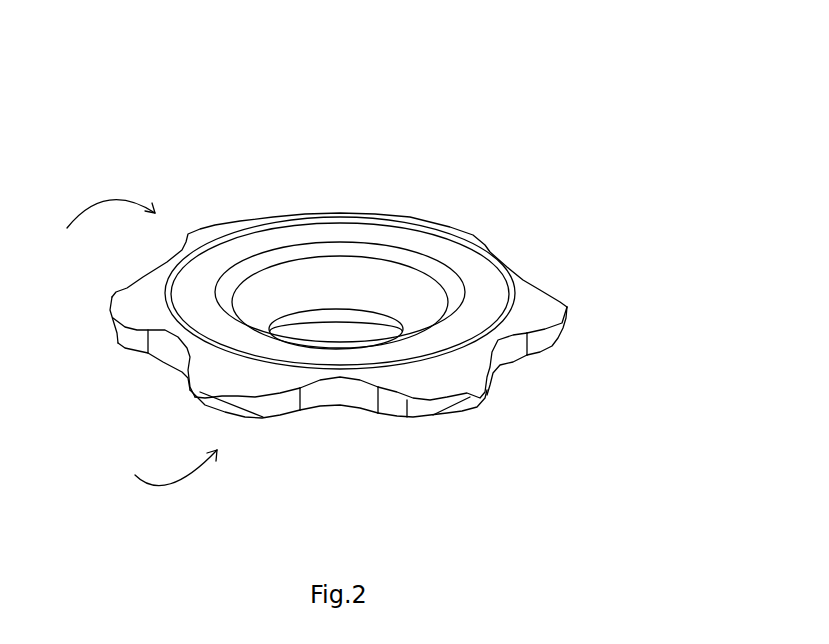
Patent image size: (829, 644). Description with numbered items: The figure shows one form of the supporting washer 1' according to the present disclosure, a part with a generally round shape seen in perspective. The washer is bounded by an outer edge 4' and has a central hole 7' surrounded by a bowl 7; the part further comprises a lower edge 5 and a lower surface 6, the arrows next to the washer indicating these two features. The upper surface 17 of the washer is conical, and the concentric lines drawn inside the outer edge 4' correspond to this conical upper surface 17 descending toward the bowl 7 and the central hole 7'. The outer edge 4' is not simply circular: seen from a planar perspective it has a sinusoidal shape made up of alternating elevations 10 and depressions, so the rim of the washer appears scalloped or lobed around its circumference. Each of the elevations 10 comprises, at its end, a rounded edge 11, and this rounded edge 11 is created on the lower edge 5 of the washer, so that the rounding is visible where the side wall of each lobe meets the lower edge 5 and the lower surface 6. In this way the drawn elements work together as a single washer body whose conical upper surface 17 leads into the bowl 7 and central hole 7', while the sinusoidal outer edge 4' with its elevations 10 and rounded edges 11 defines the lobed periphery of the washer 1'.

The supporting washer 1' is at (105, 234).
The outer edge 4' is at (437, 313).
The lower edge 5 is at (470, 407).
The lower surface 6 is at (163, 465).
The bowl 7 is at (382, 195).
The central hole 7' is at (336, 191).
The elevations 10 is at (407, 405).
The rounded edge 11 is at (453, 403).
The upper surface 17 is at (531, 298).